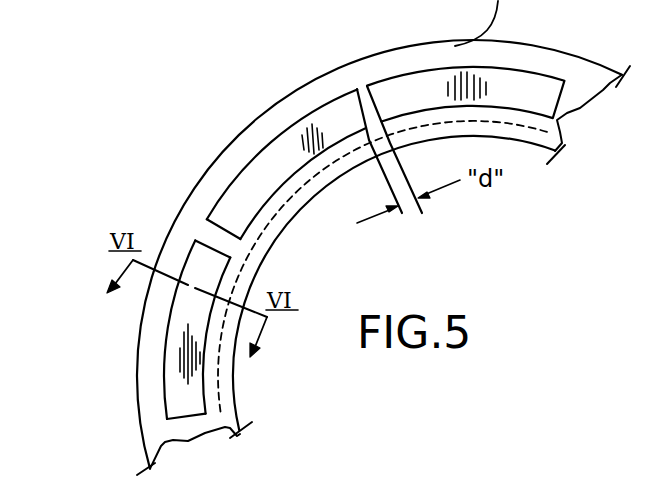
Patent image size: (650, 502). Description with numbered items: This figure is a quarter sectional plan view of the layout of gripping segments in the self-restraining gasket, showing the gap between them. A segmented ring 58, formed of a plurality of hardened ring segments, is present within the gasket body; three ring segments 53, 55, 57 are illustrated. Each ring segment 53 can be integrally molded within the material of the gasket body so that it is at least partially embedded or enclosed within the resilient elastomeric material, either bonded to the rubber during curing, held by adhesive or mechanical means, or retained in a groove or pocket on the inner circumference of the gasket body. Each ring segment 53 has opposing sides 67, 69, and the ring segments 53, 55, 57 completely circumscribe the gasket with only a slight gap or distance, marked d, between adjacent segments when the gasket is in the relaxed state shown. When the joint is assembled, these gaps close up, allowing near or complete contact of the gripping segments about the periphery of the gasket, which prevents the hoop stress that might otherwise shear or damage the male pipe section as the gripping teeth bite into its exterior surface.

The ring segment 53 is at (176, 393).
The ring segment 55 is at (250, 178).
The ring segment 57 is at (387, 98).
The segmented ring 58 is at (520, 61).
The side of ring segment 67 is at (176, 421).
The side of ring segment 69 is at (218, 236).